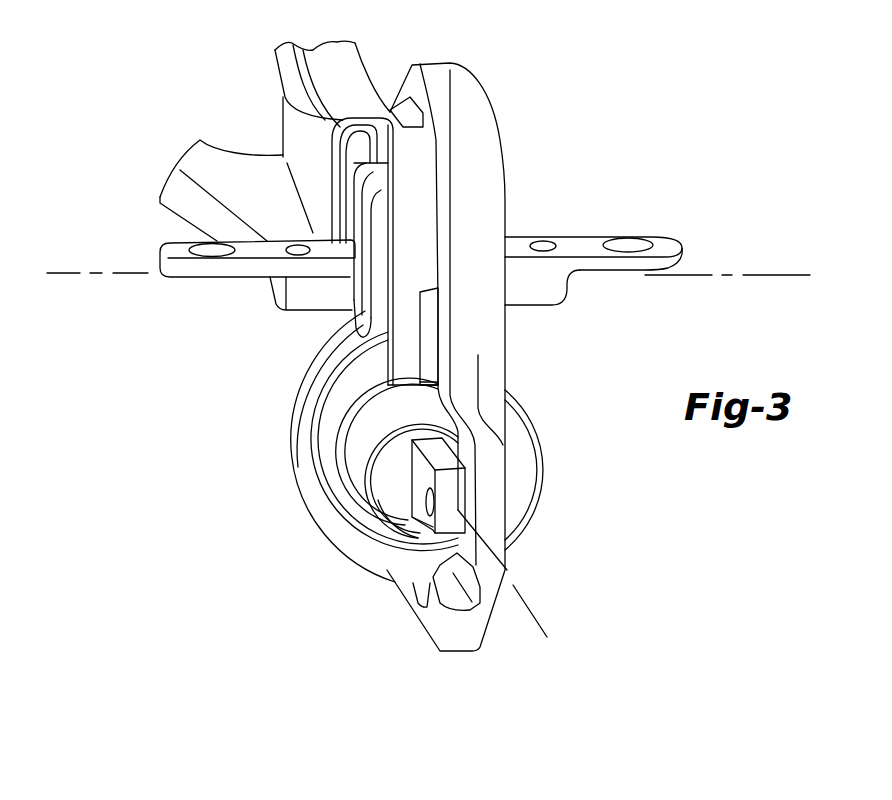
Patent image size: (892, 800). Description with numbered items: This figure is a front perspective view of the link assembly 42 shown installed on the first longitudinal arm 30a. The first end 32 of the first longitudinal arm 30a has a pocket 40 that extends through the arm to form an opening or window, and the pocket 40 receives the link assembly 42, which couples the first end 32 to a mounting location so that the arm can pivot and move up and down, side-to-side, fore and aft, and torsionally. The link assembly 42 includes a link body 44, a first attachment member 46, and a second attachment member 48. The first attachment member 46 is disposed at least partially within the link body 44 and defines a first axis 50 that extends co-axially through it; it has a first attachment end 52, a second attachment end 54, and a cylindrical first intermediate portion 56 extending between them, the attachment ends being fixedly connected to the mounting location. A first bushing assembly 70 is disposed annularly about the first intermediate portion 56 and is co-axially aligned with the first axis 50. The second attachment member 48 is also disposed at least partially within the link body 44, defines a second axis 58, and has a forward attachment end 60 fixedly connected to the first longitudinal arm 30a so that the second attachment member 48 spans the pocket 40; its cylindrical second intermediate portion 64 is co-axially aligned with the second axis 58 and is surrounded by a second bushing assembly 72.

The first longitudinal arm 30a is at (205, 168).
The pocket 40 is at (362, 148).
The first bushing assembly 70 is at (348, 191).
The second attachment end 54 is at (160, 263).
The first axis 50 is at (762, 275).
The first attachment end 52 is at (661, 246).
The first intermediate portion 56 is at (523, 290).
The first attachment member 46 is at (520, 215).
The link body 44 is at (366, 368).
The link assembly 42 is at (282, 441).
The second bushing assembly 72 is at (355, 488).
The second intermediate portion 64 is at (406, 530).
The second attachment member 48 is at (408, 541).
The forward attachment end 60 is at (447, 530).
The first end 32 is at (552, 528).
The second axis 58 is at (540, 590).